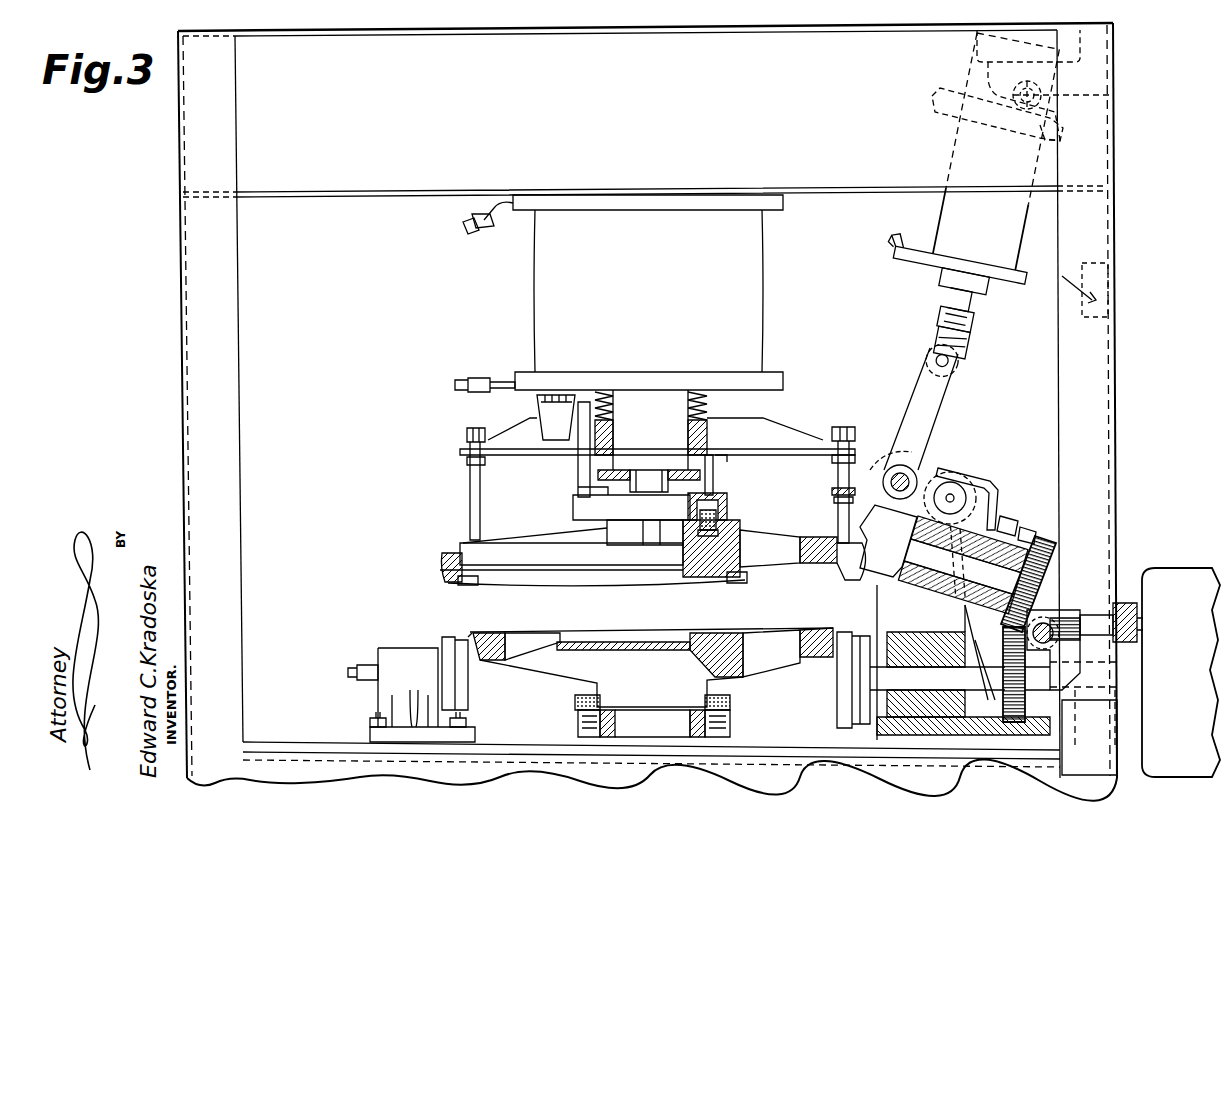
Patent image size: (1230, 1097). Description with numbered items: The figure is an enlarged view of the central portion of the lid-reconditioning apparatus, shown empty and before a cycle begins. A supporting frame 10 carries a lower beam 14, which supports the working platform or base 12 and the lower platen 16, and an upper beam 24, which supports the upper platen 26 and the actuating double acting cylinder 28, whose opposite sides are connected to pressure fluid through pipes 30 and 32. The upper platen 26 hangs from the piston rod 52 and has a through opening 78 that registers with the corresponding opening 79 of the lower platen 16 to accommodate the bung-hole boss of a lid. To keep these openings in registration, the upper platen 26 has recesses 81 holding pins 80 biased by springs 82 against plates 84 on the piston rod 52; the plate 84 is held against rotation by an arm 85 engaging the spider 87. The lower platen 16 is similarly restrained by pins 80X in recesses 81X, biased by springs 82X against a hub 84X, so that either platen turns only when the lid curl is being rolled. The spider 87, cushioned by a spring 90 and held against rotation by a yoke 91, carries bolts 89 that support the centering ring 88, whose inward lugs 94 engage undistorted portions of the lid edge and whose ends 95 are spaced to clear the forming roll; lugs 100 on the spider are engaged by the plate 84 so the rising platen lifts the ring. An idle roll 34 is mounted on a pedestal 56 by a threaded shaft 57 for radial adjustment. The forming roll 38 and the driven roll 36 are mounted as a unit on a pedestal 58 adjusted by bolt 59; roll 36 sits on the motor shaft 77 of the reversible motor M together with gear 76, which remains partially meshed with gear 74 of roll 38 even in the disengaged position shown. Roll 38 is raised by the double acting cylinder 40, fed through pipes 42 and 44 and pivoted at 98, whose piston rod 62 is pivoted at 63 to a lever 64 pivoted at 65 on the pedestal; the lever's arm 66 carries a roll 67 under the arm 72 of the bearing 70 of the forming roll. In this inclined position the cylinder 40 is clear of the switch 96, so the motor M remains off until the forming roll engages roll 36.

The supporting frame 10 is at (203, 415).
The working platform or base 12 is at (340, 745).
The lower beam 14 is at (292, 776).
The lower platen 16 is at (651, 667).
The upper beam 24 is at (646, 143).
The upper platen 26 is at (640, 556).
The actuating double acting cylinder 28 is at (648, 332).
The pipe 30 is at (472, 226).
The pipe 32 is at (466, 383).
The idle roll 34 is at (448, 638).
The driven roll 36 is at (845, 704).
The forming roll 38 is at (944, 559).
The double acting cylinder 40 is at (996, 151).
The pipe 42 is at (945, 80).
The pipe 44 is at (903, 242).
The piston rod 52 is at (662, 470).
The pedestal 56 is at (390, 715).
The shaft 57 is at (368, 664).
The pedestal 58 is at (963, 666).
The adjustment bolt 59 is at (1085, 612).
The piston rod 62 is at (970, 310).
The pivot 63 is at (954, 364).
The lever 64 is at (921, 409).
The pivot 65 is at (893, 462).
The arm 66 is at (945, 470).
The roll 67 is at (988, 480).
The bearing 70 is at (1022, 532).
The arm 72 is at (1002, 503).
The gear 74 is at (1044, 548).
The gear 76 is at (1014, 723).
The motor shaft 77 is at (1125, 660).
The recess or through opening 78 is at (760, 548).
The recess or through opening 79 is at (652, 653).
The pin 80 is at (726, 500).
The recess 81 is at (716, 534).
The spring 82 is at (718, 525).
The plate 84 is at (574, 513).
The arm 85 is at (580, 472).
The spider 87 is at (502, 442).
The centering ring 88 is at (443, 570).
The bolt 89 is at (470, 480).
The spring 90 is at (705, 412).
The yoke 91 is at (540, 412).
The lug 94 is at (520, 598).
The end 95 is at (848, 578).
The switch 96 is at (1070, 290).
The pivot 98 is at (1113, 95).
The lug 100 is at (716, 466).
The pin 80X is at (730, 714).
The recess 81X is at (700, 722).
The spring 82X is at (732, 728).
The hub 84X is at (732, 700).
The reversible motor M is at (1181, 672).